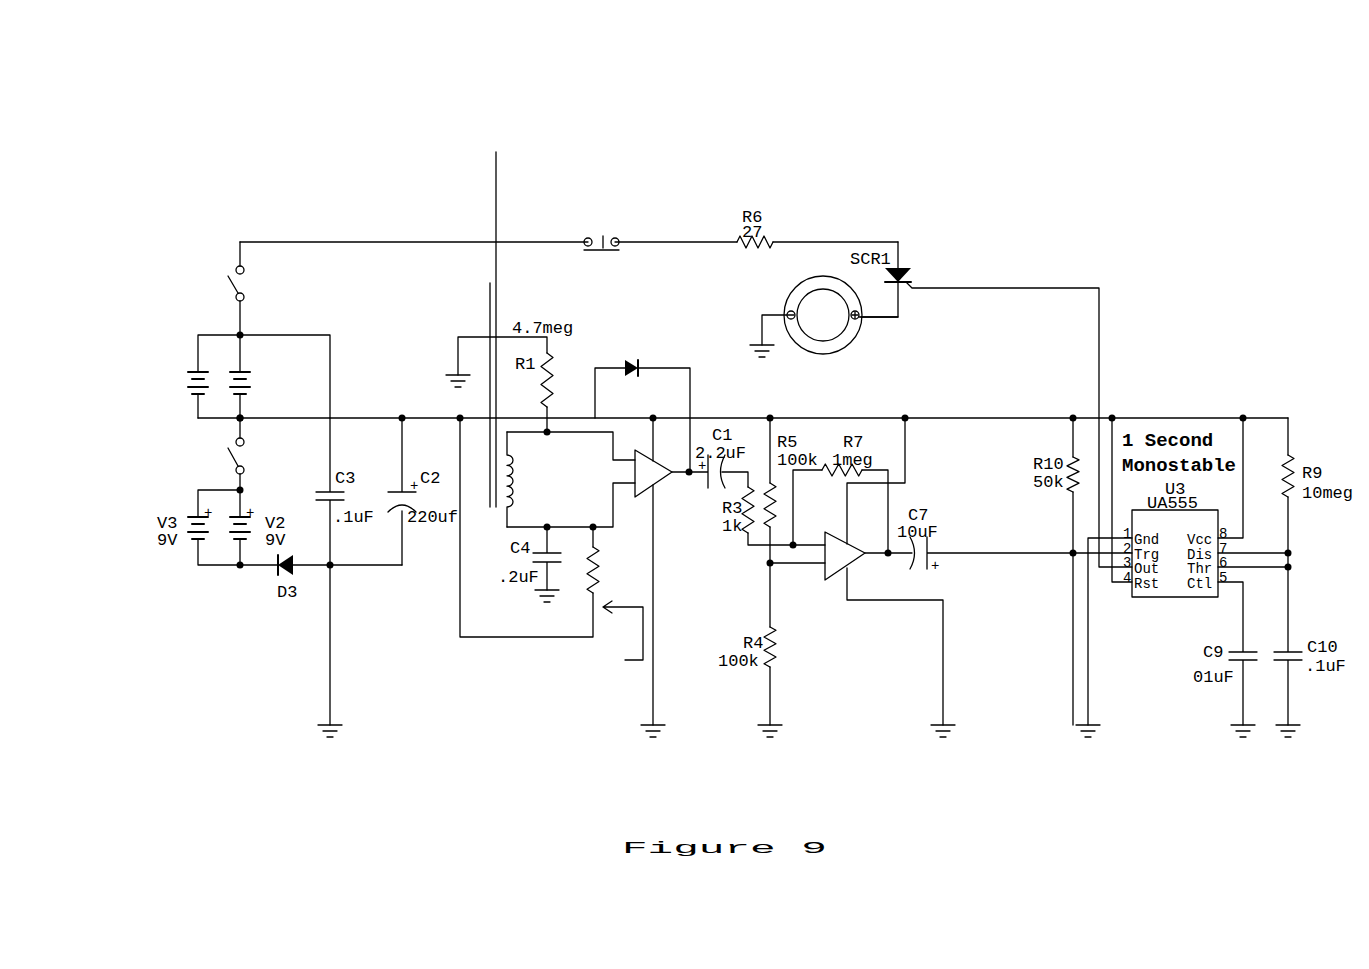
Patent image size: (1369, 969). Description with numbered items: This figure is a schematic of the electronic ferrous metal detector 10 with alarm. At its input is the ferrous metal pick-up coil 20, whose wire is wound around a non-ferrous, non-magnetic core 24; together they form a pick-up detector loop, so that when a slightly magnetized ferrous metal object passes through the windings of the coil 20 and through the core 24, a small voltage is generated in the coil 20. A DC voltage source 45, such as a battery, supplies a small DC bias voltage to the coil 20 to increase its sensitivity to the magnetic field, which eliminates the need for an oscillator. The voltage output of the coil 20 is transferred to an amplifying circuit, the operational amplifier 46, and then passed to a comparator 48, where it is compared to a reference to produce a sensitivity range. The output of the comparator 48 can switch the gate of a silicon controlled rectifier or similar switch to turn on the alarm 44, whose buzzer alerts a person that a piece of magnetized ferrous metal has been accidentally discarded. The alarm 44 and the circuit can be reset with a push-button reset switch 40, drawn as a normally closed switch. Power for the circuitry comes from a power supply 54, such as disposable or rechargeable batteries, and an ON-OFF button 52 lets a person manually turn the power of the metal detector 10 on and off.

The electronic ferrous metal detector 10 is at (343, 217).
The ON-OFF button 52 is at (228, 277).
The power supply 54 is at (198, 350).
The non-ferrous, non-magnetic core 24 is at (490, 283).
The pick-up coil 20 is at (469, 324).
The reset switch 40 is at (603, 210).
The operational amplifier 46 is at (663, 459).
The alarm 44 is at (823, 276).
The DC voltage source 45 is at (460, 593).
The comparator 48 is at (832, 585).